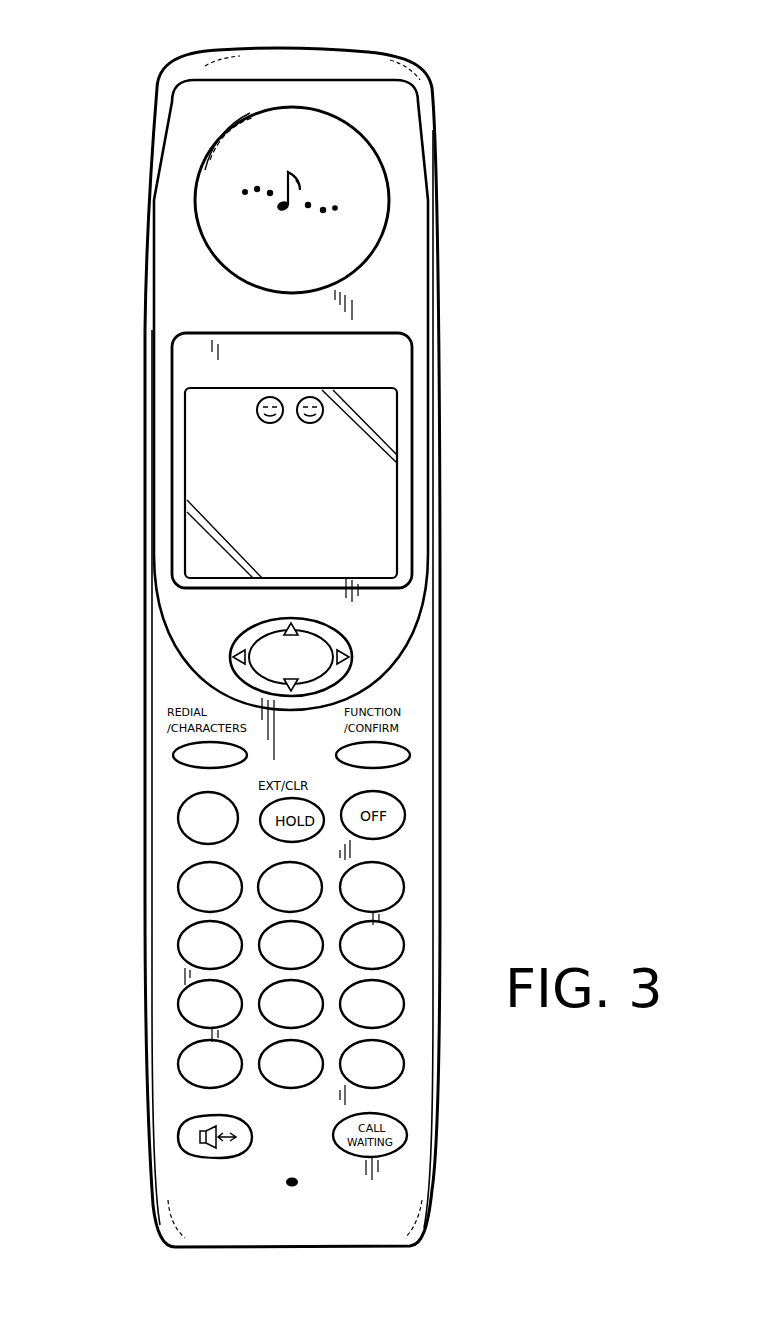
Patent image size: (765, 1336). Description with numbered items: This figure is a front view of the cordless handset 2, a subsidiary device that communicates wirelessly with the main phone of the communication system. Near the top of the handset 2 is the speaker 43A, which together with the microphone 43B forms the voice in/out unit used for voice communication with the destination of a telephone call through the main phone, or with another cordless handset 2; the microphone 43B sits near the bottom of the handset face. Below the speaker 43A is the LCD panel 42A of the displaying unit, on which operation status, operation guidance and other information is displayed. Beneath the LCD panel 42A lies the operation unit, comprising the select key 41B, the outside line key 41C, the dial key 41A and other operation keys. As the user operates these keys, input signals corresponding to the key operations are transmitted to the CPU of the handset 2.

The cordless handset 2 is at (382, 42).
The speaker 43A is at (362, 212).
The LCD panel 42A is at (372, 508).
The dial key 41A is at (418, 856).
The select key 41B is at (257, 648).
The outside line key 41C is at (182, 827).
The microphone 43B is at (305, 1190).